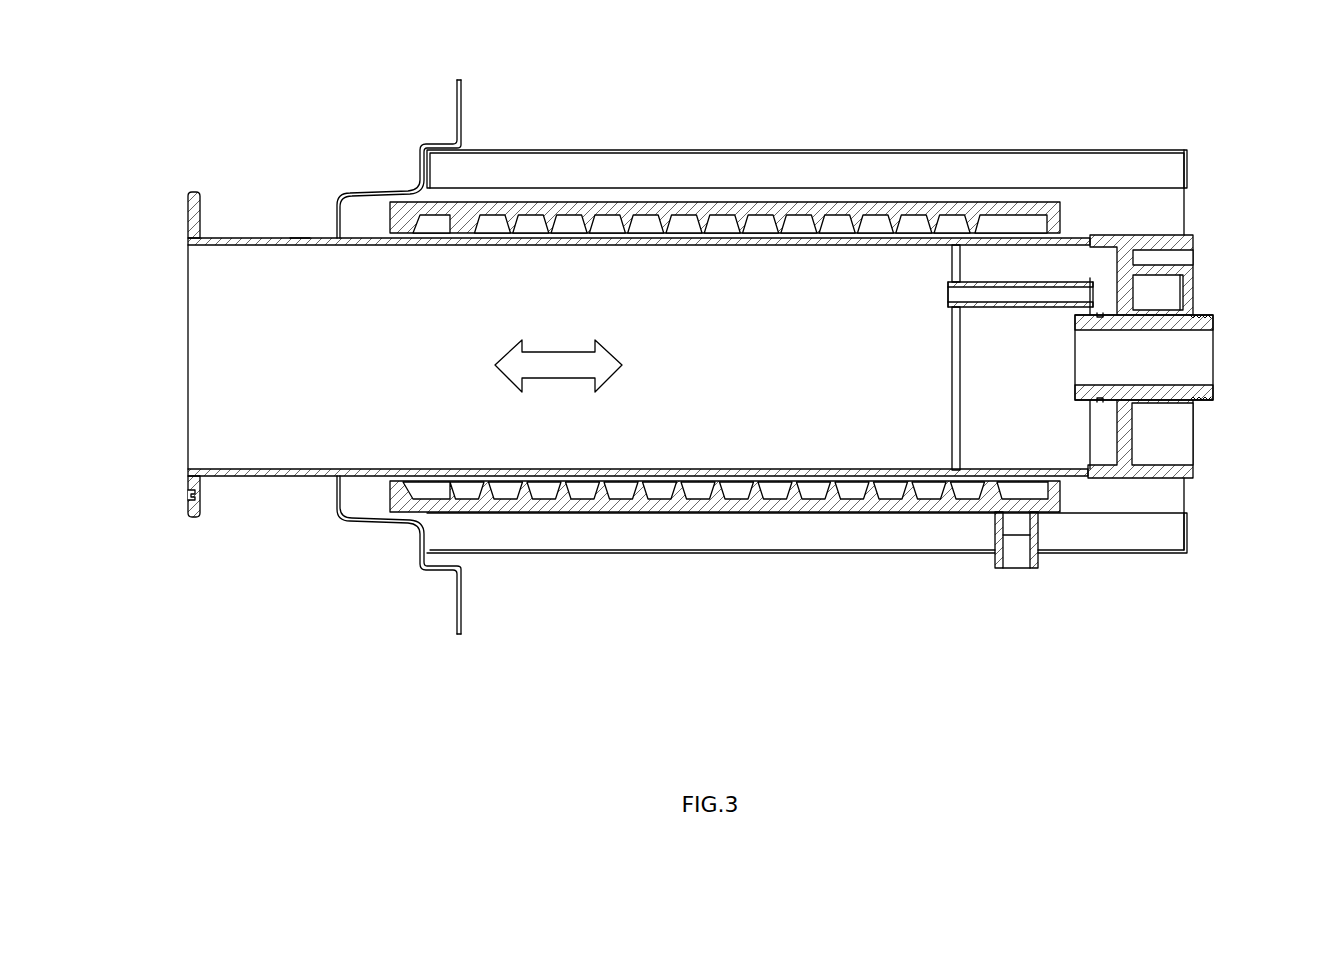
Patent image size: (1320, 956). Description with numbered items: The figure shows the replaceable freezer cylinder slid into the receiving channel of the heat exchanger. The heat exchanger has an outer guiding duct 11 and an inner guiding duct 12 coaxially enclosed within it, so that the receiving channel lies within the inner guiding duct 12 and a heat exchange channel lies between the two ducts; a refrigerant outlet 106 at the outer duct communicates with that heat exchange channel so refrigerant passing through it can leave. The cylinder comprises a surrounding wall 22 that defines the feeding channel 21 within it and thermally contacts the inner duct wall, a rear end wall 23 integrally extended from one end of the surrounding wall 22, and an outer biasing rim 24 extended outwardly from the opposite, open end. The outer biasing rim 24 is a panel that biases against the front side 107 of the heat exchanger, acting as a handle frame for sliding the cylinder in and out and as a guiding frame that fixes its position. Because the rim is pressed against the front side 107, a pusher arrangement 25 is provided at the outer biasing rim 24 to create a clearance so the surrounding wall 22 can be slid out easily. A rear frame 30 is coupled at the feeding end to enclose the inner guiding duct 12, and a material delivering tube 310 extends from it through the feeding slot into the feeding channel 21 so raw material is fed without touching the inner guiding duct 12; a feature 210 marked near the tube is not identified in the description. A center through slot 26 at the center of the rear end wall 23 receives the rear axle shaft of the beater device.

The outer guiding duct 11 is at (765, 506).
The inner guiding duct 12 is at (680, 485).
The feeding channel 21 is at (232, 360).
The surrounding wall 22 is at (297, 244).
The rear end wall 23 is at (957, 263).
The outer biasing rim 24 is at (192, 218).
The pusher arrangement 25 is at (183, 498).
The center through slot 26 is at (972, 353).
The rear frame 30 is at (1178, 241).
The refrigerant outlet 106 is at (1013, 545).
The front side 107 is at (333, 495).
The pipe end opening 210 is at (945, 293).
The material delivering tube 310 is at (984, 280).